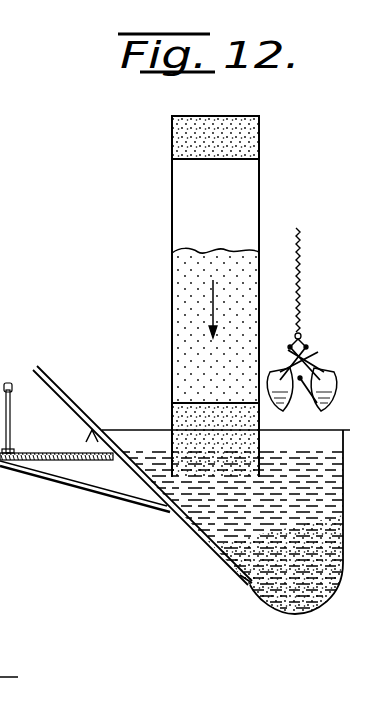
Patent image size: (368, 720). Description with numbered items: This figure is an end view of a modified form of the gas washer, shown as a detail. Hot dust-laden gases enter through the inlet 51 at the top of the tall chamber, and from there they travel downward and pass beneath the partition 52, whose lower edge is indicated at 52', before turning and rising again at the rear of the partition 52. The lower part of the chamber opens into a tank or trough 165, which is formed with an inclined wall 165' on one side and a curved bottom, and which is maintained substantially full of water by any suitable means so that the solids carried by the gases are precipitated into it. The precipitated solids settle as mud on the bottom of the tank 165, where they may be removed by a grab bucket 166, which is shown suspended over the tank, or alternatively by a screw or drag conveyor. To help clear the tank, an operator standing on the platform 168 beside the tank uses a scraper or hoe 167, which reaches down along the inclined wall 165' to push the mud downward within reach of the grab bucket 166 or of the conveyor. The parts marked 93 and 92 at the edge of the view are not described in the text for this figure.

The inlet 51 is at (172, 144).
The partition 52 is at (188, 281).
The lower edge of the partition 52' is at (187, 422).
The tank or trough 165 is at (233, 526).
The inclined wall 165' is at (206, 583).
The grab bucket 166 is at (326, 380).
The scraper or hoe 167 is at (72, 372).
The platform 168 is at (60, 446).
The conveyor chute 93 is at (85, 523).
The conveyor 92 is at (9, 658).